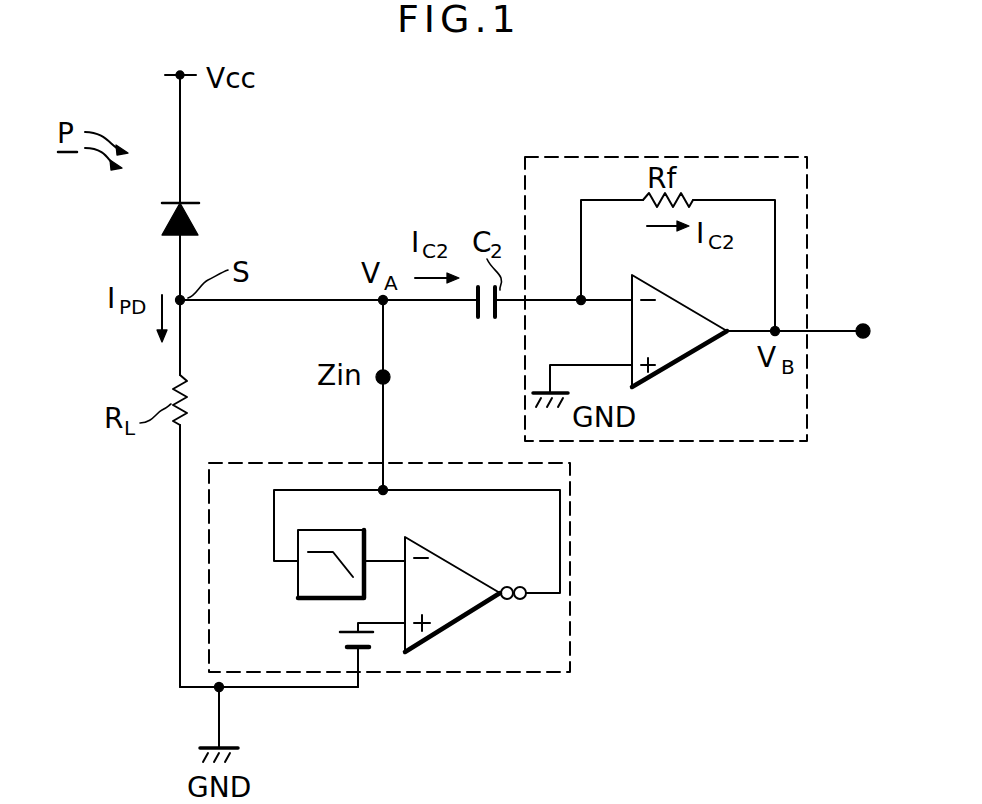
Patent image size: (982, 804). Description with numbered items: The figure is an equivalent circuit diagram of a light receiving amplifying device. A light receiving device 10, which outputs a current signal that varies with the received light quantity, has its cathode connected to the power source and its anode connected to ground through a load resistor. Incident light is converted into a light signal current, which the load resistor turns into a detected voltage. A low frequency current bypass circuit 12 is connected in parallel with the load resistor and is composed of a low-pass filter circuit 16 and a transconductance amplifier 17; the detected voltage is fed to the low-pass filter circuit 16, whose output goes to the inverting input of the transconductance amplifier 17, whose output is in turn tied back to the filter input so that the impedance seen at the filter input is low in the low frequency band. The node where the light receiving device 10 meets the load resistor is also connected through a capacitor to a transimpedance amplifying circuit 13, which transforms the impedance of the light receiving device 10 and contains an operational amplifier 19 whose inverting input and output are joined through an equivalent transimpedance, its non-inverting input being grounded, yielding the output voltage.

The light receiving device 10 is at (198, 223).
The low frequency current bypass circuit 12 is at (570, 555).
The transimpedance amplifying circuit 13 is at (590, 157).
The low-pass filter circuit 16 is at (306, 598).
The transconductance amplifier 17 is at (473, 614).
The operational amplifier 19 is at (697, 353).